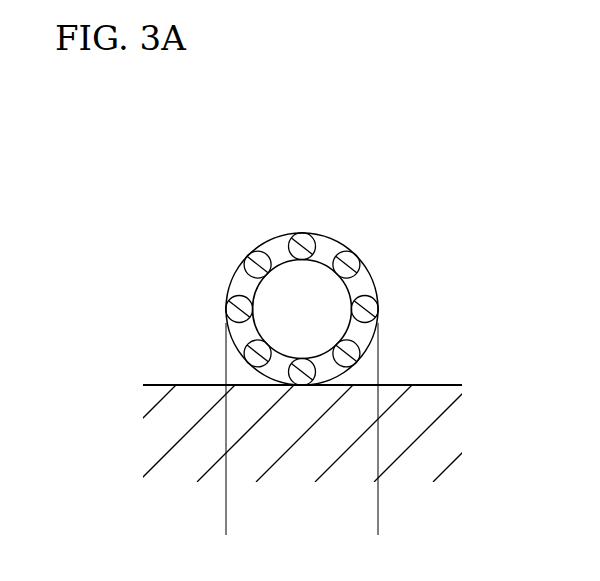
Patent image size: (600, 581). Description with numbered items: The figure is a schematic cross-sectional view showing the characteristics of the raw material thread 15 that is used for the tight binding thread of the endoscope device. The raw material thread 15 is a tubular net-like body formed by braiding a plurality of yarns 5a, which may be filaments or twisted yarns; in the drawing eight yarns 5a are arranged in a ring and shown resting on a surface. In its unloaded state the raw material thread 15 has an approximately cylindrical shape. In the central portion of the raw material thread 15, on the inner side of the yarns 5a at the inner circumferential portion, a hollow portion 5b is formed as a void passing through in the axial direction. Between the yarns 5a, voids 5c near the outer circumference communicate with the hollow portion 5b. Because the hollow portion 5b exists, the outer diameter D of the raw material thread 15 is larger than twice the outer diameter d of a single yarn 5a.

The raw material thread 15 is at (298, 257).
The yarn 5a is at (250, 252).
The hollow portion 5b is at (327, 311).
The void 5c is at (234, 281).
The outer diameter of the yarn d is at (302, 305).
The outer diameter of the raw material thread D is at (377, 527).